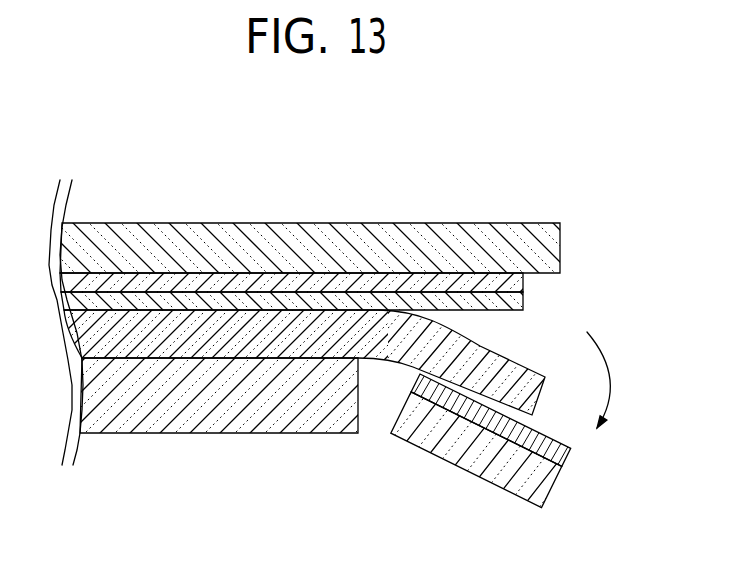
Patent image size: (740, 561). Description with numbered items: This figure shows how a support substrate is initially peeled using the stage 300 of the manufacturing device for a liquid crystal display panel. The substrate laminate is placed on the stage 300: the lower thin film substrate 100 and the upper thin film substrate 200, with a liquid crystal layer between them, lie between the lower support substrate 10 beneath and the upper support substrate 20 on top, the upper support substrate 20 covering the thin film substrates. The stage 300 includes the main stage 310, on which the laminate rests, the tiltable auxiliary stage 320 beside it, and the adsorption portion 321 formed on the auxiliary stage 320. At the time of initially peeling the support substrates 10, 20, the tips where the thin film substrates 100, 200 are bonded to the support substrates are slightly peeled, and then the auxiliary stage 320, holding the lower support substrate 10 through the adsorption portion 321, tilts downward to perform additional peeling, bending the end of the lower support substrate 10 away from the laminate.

The lower support substrate 10 is at (320, 332).
The upper support substrate 20 is at (395, 243).
The lower thin film substrate 100 is at (243, 305).
The upper thin film substrate 200 is at (156, 285).
The stage 300 is at (331, 457).
The main stage 310 is at (243, 408).
The auxiliary stage 320 is at (460, 463).
The adsorption portion 321 is at (573, 448).